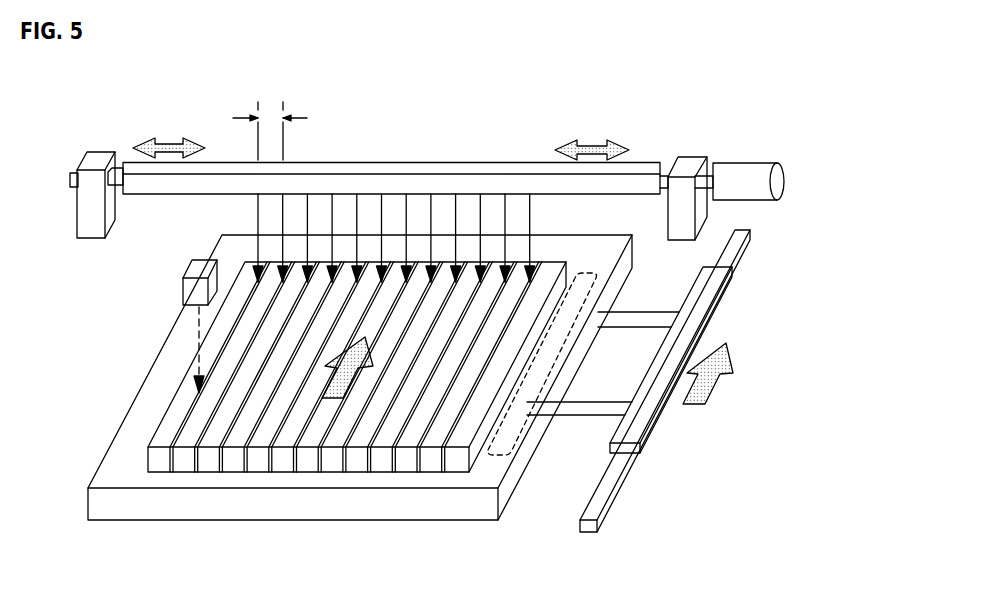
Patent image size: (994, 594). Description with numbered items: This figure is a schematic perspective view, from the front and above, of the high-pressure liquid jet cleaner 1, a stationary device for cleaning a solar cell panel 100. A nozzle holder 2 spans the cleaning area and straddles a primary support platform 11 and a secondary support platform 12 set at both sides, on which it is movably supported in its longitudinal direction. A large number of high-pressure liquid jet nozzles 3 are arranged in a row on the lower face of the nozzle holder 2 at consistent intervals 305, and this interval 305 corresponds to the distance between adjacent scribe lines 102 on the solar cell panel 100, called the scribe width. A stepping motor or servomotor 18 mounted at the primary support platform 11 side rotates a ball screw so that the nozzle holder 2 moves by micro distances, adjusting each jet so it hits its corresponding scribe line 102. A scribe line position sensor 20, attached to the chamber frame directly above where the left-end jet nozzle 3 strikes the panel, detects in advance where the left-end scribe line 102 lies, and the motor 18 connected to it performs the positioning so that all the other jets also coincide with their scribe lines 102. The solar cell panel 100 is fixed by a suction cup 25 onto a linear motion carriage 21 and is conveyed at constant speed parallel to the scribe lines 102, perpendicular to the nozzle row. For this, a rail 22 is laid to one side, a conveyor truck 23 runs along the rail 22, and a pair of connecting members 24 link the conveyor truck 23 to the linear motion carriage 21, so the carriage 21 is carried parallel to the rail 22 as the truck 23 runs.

The high-pressure liquid jet cleaner 1 is at (445, 303).
The nozzle holder 2 is at (633, 162).
The high-pressure liquid jet nozzles 3 is at (282, 195).
The interval 305 is at (270, 116).
The primary support platform 11 is at (700, 218).
The secondary support platform 12 is at (98, 239).
The stepping motor or servomotor 18 is at (745, 167).
The scribe line position sensor 20 is at (183, 289).
The solar cell panel 100 is at (319, 420).
The scribe lines 102 is at (202, 437).
The linear motion carriage 21 is at (550, 425).
The suction cup 25 is at (498, 473).
The rail 22 is at (605, 493).
The conveyor truck 23 is at (647, 408).
The connecting members 24 is at (610, 400).